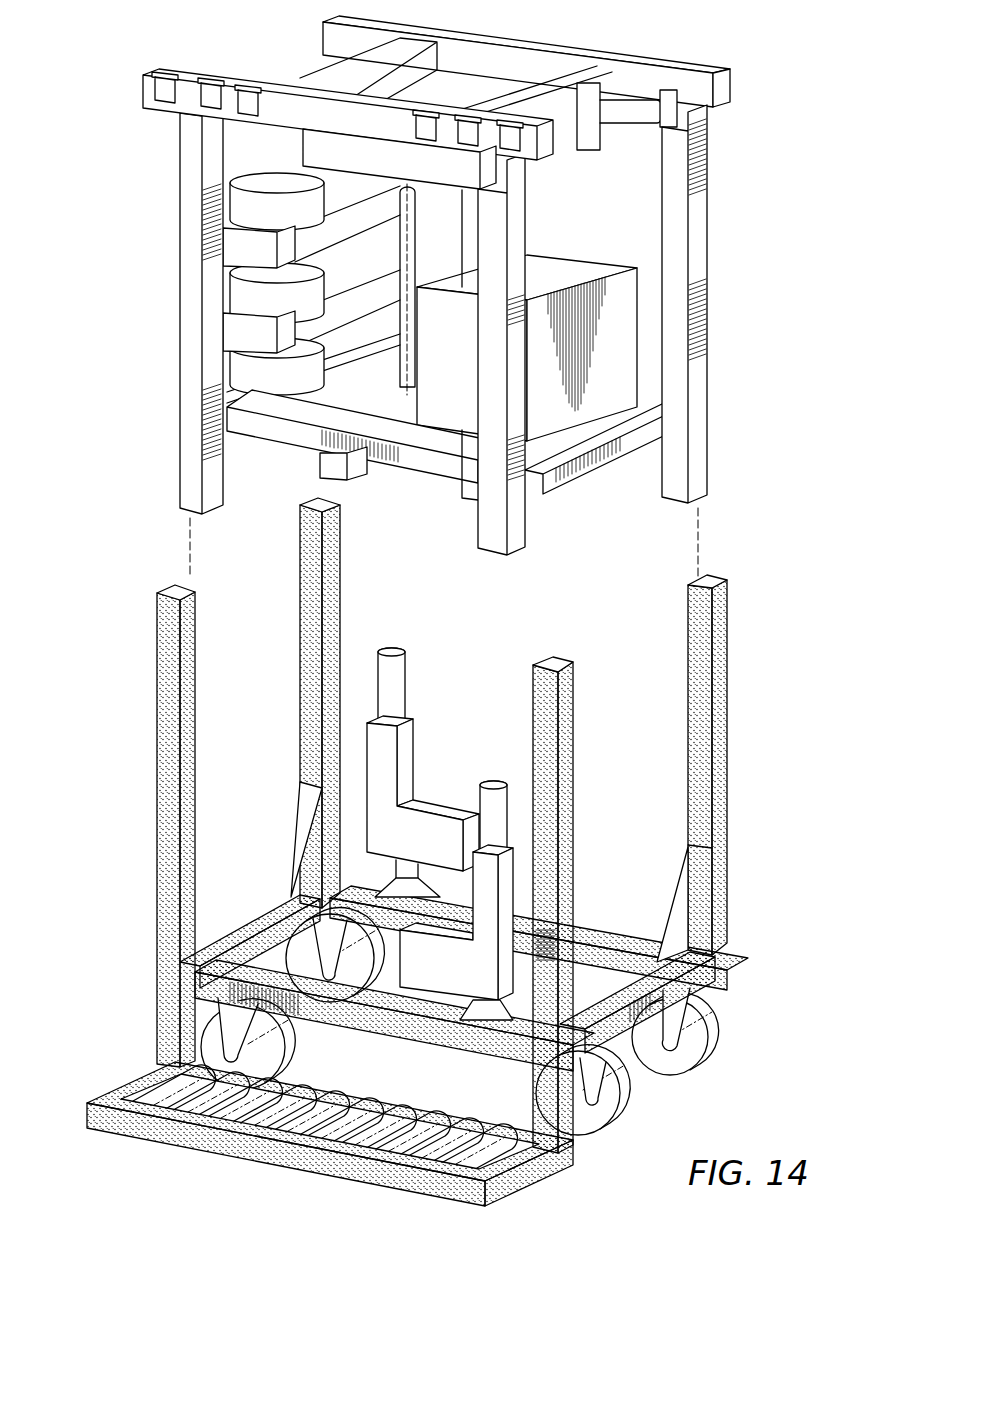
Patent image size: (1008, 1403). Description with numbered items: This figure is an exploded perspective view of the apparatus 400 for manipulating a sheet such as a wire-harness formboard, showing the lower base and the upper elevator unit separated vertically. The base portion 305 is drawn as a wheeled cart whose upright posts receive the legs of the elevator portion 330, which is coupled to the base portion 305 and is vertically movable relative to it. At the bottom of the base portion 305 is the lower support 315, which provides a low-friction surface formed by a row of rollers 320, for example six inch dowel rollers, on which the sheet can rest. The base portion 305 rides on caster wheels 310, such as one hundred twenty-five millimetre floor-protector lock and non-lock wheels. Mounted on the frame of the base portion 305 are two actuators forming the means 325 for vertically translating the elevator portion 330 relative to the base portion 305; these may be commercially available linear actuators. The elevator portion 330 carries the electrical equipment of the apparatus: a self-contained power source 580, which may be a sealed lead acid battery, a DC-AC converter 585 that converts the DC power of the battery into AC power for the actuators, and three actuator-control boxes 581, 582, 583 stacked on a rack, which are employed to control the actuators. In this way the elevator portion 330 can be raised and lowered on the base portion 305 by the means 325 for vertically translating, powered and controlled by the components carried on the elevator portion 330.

The base portion 305 is at (310, 601).
The wheels 310 is at (303, 947).
The lower support 315 is at (520, 1178).
The roller 320 is at (352, 1130).
The means for vertically translating 325 is at (382, 759).
The elevator portion 330 is at (188, 305).
The apparatus 400 is at (431, 878).
The self-contained power source 580 is at (612, 357).
The actuator-control box 581 is at (330, 213).
The actuator-control box 582 is at (287, 295).
The actuator-control box 583 is at (287, 378).
The DC-AC converter 585 is at (328, 152).